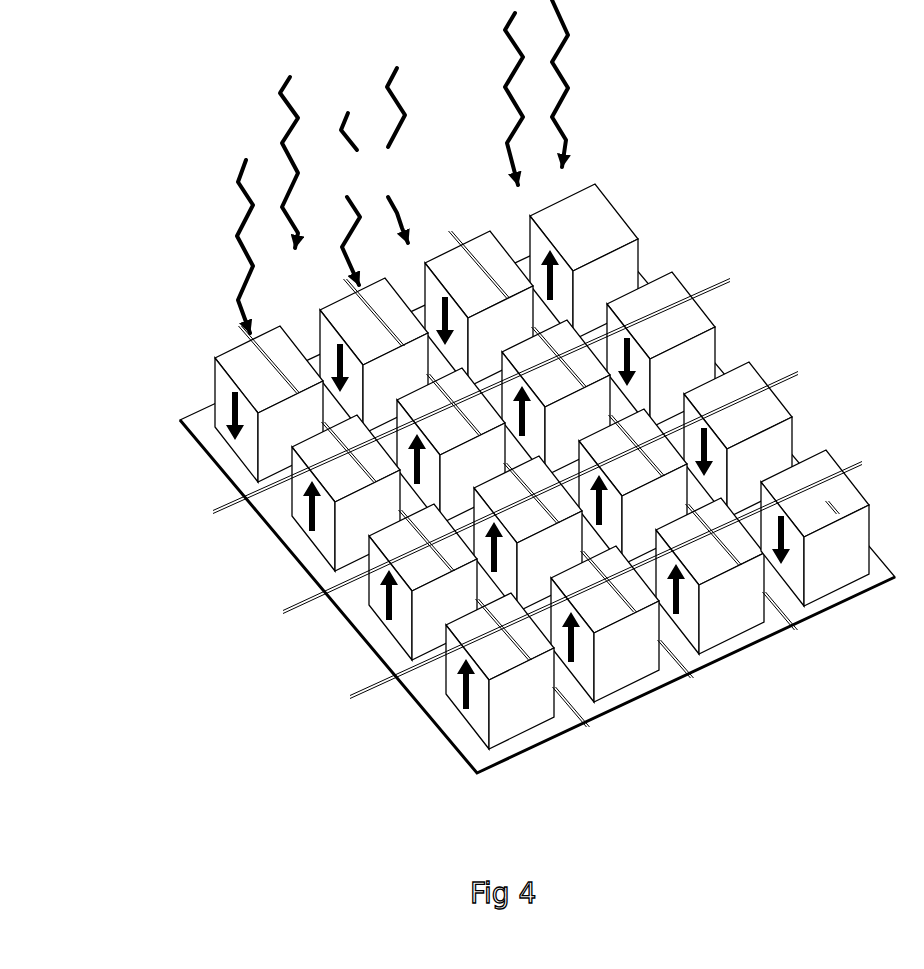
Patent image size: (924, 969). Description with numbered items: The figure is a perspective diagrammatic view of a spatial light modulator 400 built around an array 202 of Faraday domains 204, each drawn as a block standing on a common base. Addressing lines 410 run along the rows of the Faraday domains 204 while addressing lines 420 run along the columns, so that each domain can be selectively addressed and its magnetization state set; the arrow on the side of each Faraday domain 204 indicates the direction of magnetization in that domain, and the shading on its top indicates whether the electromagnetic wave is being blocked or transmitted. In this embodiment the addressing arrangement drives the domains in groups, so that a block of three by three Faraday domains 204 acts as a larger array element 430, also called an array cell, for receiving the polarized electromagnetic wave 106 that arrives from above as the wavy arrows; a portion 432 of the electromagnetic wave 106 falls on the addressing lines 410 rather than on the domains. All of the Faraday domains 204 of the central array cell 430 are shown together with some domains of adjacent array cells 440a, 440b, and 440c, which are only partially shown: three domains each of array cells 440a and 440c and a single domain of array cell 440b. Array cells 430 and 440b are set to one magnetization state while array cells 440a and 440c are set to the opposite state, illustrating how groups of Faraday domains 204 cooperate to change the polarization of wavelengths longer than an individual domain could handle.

The polarized EMW 106 is at (436, 166).
The array 202 is at (200, 456).
The Faraday domain 204 is at (748, 610).
The spatial light modulator 400 is at (503, 513).
The addressing lines 410 is at (284, 611).
The addressing lines 420 is at (592, 731).
The larger array element 430 is at (320, 530).
The portion of EMW 432 is at (248, 334).
The adjacent array cell 440a is at (374, 176).
The adjacent array cell 440b is at (576, 92).
The adjacent array cell 440c is at (864, 299).